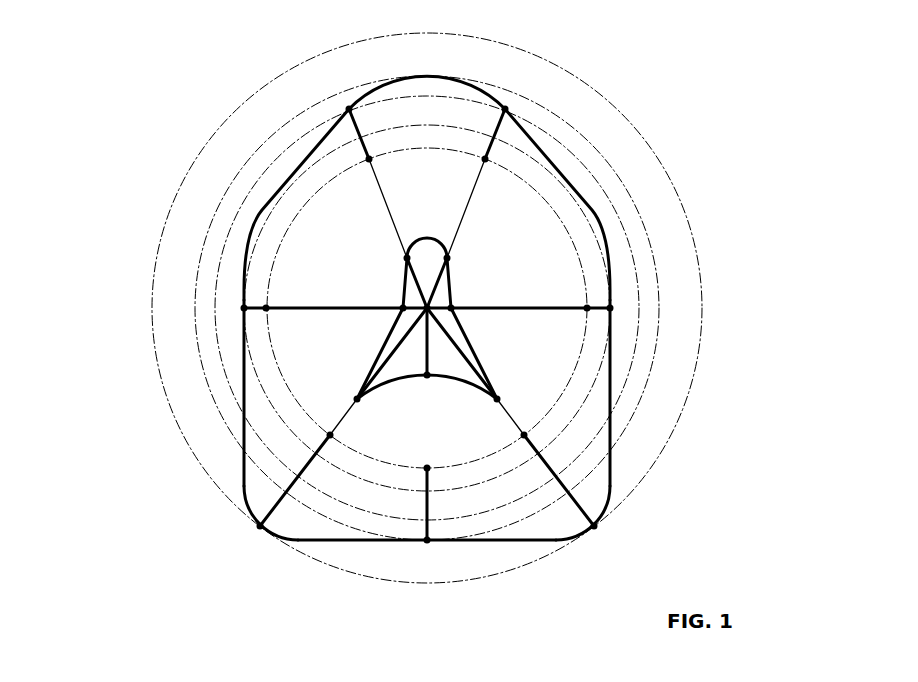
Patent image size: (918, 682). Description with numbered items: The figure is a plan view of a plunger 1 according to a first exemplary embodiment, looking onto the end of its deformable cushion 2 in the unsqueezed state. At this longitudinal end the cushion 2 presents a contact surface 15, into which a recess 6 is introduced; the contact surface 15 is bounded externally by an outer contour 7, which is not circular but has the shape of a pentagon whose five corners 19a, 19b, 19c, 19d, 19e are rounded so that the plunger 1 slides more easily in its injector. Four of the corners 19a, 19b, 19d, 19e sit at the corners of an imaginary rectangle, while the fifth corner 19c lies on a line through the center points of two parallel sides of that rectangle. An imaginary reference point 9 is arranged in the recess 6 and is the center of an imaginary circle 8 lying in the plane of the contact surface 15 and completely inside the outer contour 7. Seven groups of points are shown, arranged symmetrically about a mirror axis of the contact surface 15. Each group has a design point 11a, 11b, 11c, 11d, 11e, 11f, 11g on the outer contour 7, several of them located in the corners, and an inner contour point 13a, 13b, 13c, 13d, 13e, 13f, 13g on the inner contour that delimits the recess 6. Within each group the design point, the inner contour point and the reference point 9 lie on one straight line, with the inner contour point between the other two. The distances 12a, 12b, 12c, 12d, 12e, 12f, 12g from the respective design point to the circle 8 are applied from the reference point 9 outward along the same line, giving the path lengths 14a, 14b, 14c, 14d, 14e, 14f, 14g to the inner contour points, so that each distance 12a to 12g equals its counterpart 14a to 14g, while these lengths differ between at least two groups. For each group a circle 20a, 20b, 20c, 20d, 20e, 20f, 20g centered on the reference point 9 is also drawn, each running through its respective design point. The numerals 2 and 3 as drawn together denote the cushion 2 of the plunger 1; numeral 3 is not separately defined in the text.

The plunger 1 is at (214, 84).
The cushion 2 is at (425, 298).
The rim body 3 is at (420, 298).
The recess 6 is at (427, 412).
The outer contour 7 is at (613, 457).
The circle 8 is at (582, 353).
The reference point 9 is at (431, 240).
The design point 11a is at (258, 527).
The design point 11b is at (243, 307).
The design point 11c is at (349, 106).
The design point 11d is at (505, 106).
The design point 11e is at (611, 307).
The design point 11f is at (597, 527).
The design point 11g is at (427, 543).
The distance 12a is at (265, 495).
The distance 12b is at (266, 312).
The distance 12c is at (372, 160).
The distance 12d is at (483, 161).
The distance 12e is at (587, 312).
The distance 12f is at (580, 496).
The distance 12g is at (430, 512).
The inner contour point 13a is at (354, 399).
The inner contour point 13b is at (400, 307).
The inner contour point 13c is at (404, 257).
The inner contour point 13d is at (450, 257).
The inner contour point 13e is at (454, 307).
The inner contour point 13f is at (500, 399).
The inner contour point 13g is at (432, 380).
The path length 14a is at (392, 348).
The distance 14b is at (397, 320).
The distance 14c is at (404, 283).
The distance 14d is at (450, 283).
The distance 14e is at (455, 320).
The distance 14f is at (462, 350).
The distance 14g is at (424, 368).
The contact surface 15 is at (626, 204).
The corner 19a is at (258, 540).
The corner 19b is at (260, 212).
The corner 19c is at (427, 74).
The corner 19d is at (592, 212).
The corner 19e is at (597, 540).
The first circle 20a is at (359, 308).
The second circle 20b is at (335, 308).
The circle 20c is at (326, 308).
The circle 20d is at (228, 386).
The circle 20e is at (267, 401).
The circle 20f is at (155, 350).
The circle 20g is at (200, 366).